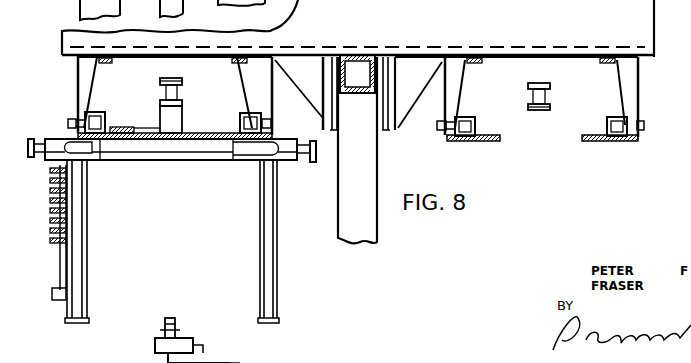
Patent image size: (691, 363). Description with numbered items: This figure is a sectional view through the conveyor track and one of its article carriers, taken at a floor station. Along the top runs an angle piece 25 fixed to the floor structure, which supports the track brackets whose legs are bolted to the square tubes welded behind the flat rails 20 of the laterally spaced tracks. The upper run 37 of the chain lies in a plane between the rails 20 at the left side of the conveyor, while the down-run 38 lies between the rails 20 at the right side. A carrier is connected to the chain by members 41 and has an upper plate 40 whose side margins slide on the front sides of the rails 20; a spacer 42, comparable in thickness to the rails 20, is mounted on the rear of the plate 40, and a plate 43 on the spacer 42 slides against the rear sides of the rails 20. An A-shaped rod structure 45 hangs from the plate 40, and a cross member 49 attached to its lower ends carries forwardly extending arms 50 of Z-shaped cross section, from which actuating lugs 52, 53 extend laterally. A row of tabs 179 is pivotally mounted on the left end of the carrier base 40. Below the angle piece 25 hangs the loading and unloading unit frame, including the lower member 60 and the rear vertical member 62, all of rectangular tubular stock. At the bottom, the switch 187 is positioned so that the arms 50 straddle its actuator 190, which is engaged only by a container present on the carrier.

The rails 20 is at (88, 139).
The angle pieces 25 is at (478, 34).
The upper run 37 is at (165, 90).
The down-run 38 is at (550, 111).
The upper plate 40 is at (158, 150).
The members 41 is at (176, 111).
The spacer 42 is at (137, 128).
The plate 43 is at (117, 126).
The A-shaped rod structure 45 is at (108, 148).
The cross member 49 is at (251, 160).
The arms 50 is at (79, 233).
The actuating lug 52 is at (42, 153).
The actuating lug 53 is at (307, 162).
The lower member 60 is at (366, 179).
The rear vertical member 62 is at (366, 55).
The tabs 179 is at (50, 193).
The switch 187 is at (178, 347).
The actuator 190 is at (165, 318).